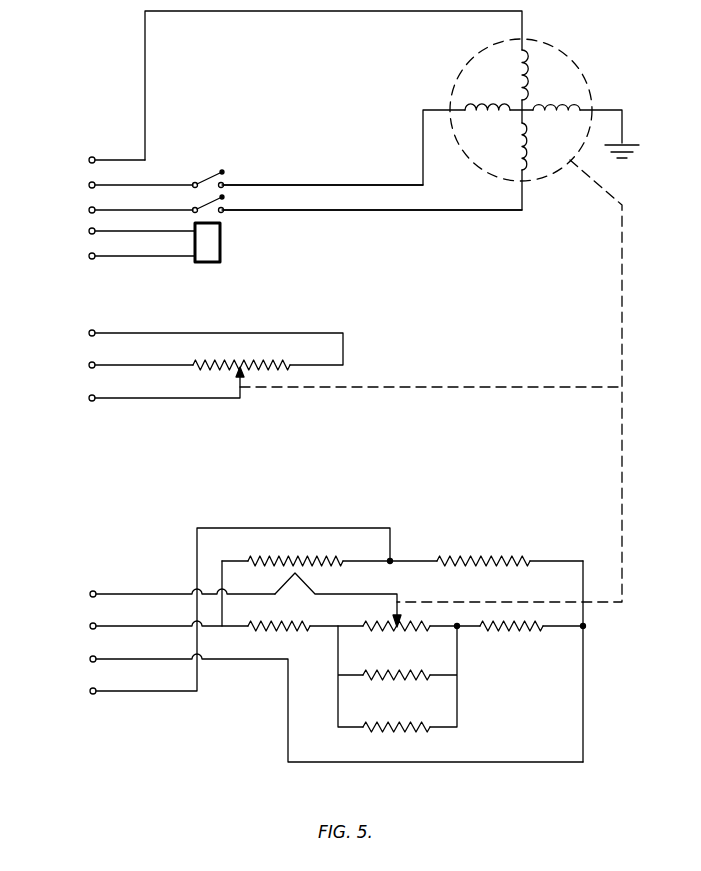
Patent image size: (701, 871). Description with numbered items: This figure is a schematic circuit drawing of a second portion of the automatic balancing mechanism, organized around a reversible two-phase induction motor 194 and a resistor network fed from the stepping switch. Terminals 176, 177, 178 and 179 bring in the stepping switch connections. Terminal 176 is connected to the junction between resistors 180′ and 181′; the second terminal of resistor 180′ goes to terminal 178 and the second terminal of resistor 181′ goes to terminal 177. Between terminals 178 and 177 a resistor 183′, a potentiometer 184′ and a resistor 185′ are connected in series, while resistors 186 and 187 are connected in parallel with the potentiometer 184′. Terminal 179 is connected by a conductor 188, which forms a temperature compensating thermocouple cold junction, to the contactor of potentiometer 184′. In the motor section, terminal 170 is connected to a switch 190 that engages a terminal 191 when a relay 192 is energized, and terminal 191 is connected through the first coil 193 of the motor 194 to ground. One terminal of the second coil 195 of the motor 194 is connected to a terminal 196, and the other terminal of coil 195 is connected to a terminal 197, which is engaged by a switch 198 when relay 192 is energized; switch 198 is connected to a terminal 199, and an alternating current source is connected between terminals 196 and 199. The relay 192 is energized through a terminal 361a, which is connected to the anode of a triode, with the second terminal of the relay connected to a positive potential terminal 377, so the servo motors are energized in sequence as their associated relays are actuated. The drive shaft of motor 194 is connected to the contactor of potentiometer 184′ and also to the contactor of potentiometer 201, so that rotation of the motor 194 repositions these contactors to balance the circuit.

The terminal 170 is at (90, 189).
The terminal 176 is at (90, 691).
The terminal 177 is at (90, 659).
The terminal 178 is at (90, 626).
The terminal 179 is at (90, 594).
The resistor 180' is at (329, 535).
The resistor 181' is at (510, 549).
The resistor 183' is at (305, 640).
The potentiometer 184' is at (421, 639).
The resistor 185' is at (531, 639).
The resistor 186 is at (397, 678).
The resistor 187 is at (389, 729).
The conductor 188 is at (308, 585).
The switch 190 is at (207, 181).
The terminal 191 is at (225, 184).
The relay 192 is at (220, 245).
The first coil 193 is at (502, 80).
The reversible two-phase induction motor 194 is at (580, 71).
The second coil 195 is at (515, 140).
The terminal 196 is at (89, 159).
The terminal 197 is at (221, 213).
The switch 198 is at (198, 209).
The terminal 199 is at (90, 214).
The potentiometer 201 is at (261, 361).
The terminal 361a is at (89, 230).
The positive potential terminal 377 is at (90, 260).